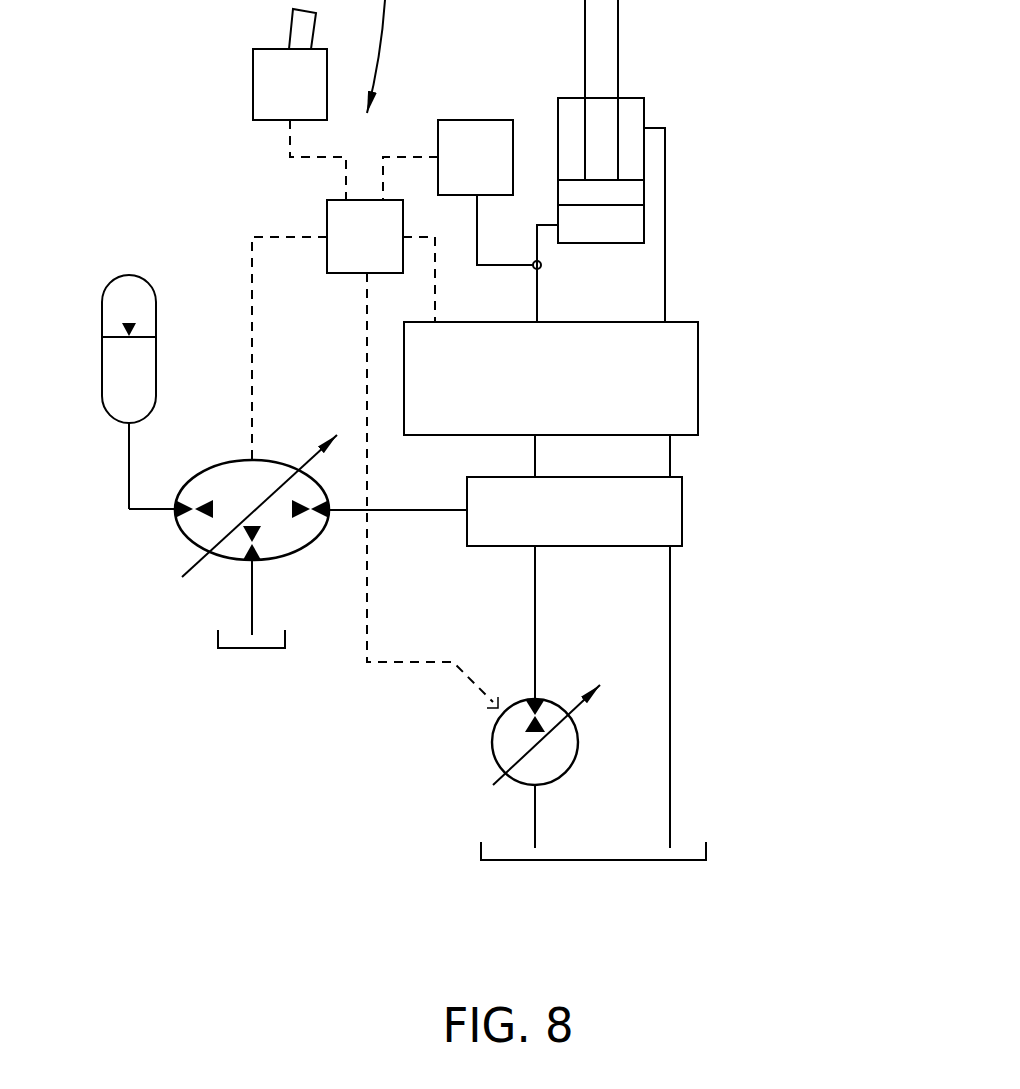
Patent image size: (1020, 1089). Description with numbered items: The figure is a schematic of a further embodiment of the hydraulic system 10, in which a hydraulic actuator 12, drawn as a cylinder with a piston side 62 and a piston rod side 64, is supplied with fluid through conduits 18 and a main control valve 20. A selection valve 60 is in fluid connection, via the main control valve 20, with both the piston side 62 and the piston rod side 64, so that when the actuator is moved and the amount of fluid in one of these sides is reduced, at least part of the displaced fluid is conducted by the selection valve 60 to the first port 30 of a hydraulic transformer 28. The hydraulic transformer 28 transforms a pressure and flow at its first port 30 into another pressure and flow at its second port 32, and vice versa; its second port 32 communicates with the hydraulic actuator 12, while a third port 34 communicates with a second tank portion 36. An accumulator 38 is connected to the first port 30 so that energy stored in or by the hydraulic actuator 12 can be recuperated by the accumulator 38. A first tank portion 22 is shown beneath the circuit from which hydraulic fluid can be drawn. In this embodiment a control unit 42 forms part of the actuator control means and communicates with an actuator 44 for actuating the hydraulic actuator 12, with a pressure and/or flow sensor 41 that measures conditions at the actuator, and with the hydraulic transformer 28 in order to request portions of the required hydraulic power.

The hydraulic system 10 is at (787, 157).
The hydraulic actuator 12 is at (540, 92).
The conduits 18 is at (545, 315).
The main control valve 20 is at (533, 391).
The first tank portion 22 is at (570, 873).
The hydraulic transformer 28 is at (237, 457).
The first port 30 is at (167, 518).
The second port 32 is at (337, 502).
The third port 34 is at (260, 568).
The second tank portion 36 is at (233, 658).
The accumulator 38 is at (142, 270).
The pressure sensor and/or flow sensor 41 is at (462, 170).
The control unit 42 is at (351, 250).
The actuator 44 is at (276, 98).
The selection valve 60 is at (561, 523).
The piston side 62 is at (575, 228).
The piston rod side 64 is at (633, 117).